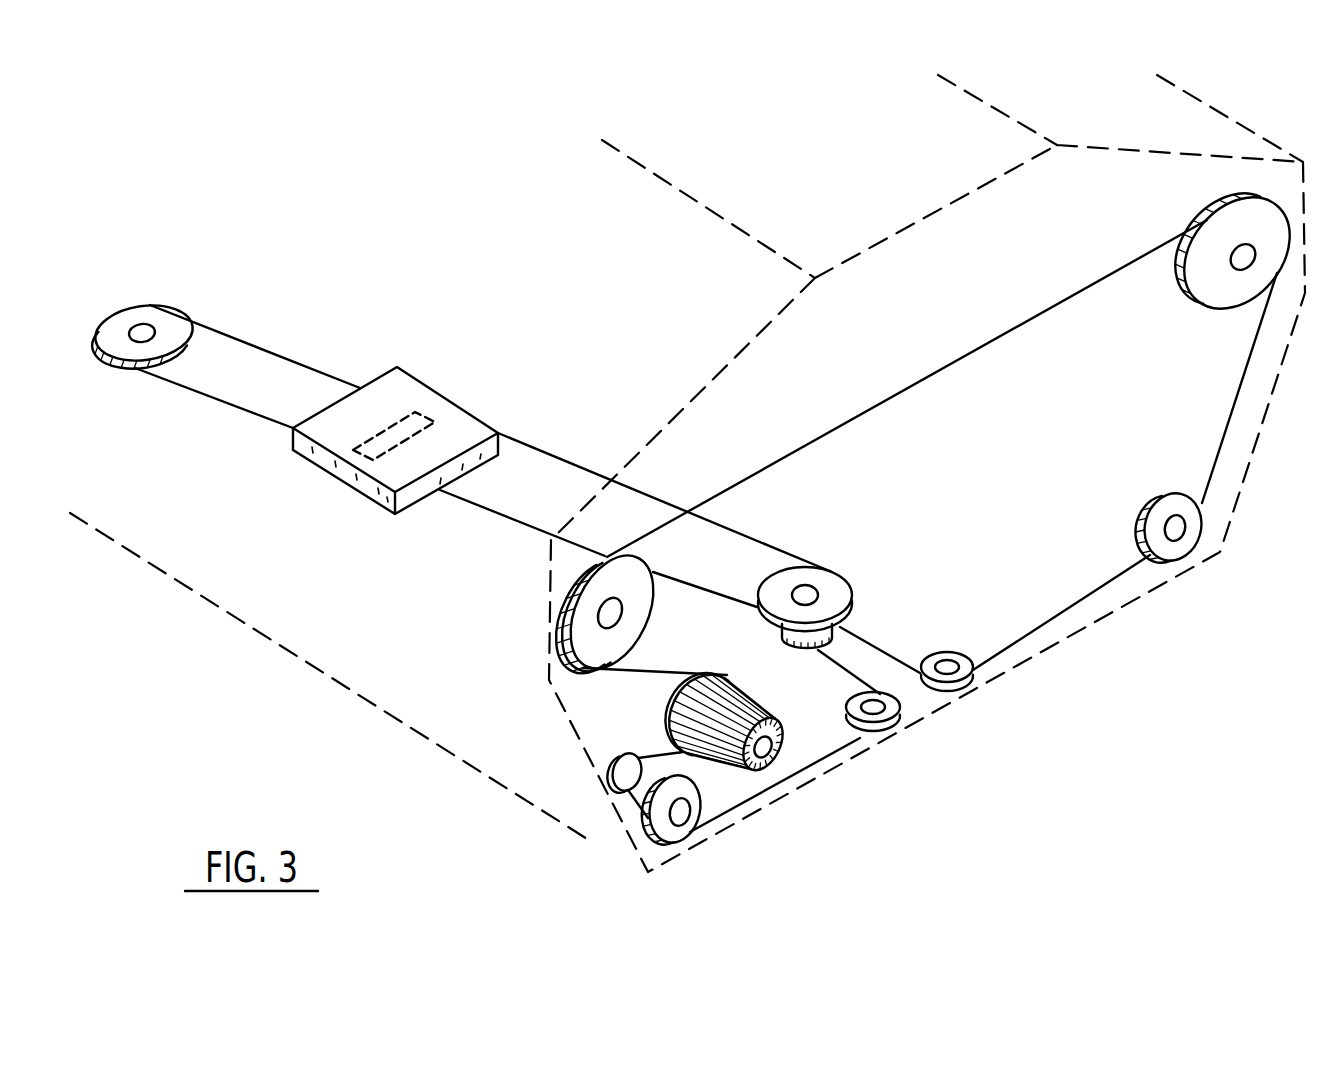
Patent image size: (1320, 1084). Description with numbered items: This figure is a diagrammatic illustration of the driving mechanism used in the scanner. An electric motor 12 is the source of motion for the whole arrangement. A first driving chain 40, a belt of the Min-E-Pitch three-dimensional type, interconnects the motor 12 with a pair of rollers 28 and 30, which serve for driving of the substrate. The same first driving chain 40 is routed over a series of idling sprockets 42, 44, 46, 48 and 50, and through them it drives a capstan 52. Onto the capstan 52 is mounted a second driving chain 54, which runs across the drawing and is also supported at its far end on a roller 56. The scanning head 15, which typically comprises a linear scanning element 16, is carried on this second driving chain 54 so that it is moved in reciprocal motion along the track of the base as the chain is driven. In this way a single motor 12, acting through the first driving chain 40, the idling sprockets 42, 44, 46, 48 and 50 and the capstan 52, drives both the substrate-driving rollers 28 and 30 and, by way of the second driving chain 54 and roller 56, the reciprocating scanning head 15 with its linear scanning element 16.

The motor 12 is at (765, 750).
The scanning head 15 is at (455, 433).
The linear scanning element 16 is at (430, 406).
The roller 28 is at (1213, 253).
The roller 30 is at (582, 628).
The first driving chain 40 is at (1220, 447).
The idling sprocket 42 is at (1193, 527).
The idling sprocket 44 is at (967, 693).
The idling sprocket 46 is at (675, 830).
The idling sprocket 48 is at (892, 716).
The idling sprocket 50 is at (628, 782).
The capstan 52 is at (837, 588).
The second driving chain 54 is at (773, 542).
The roller 56 is at (172, 328).